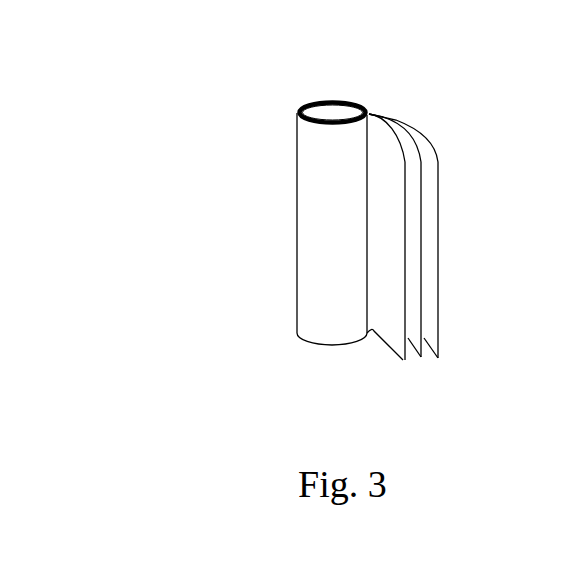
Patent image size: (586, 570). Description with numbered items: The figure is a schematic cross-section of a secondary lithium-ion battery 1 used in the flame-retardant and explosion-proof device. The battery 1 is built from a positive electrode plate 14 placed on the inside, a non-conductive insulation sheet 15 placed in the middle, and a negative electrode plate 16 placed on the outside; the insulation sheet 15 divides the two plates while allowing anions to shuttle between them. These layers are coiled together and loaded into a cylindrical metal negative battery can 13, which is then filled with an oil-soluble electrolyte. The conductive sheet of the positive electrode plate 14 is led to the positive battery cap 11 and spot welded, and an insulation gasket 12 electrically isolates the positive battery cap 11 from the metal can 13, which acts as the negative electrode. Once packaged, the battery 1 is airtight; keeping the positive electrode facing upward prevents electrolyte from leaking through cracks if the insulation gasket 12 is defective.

The battery 1 is at (325, 238).
The positive battery cap 11 is at (347, 97).
The insulation gasket 12 is at (294, 108).
The negative battery can 13 is at (296, 283).
The positive electrode plate 14 is at (407, 320).
The insulation sheet 15 is at (425, 222).
The negative electrode plate 16 is at (422, 128).